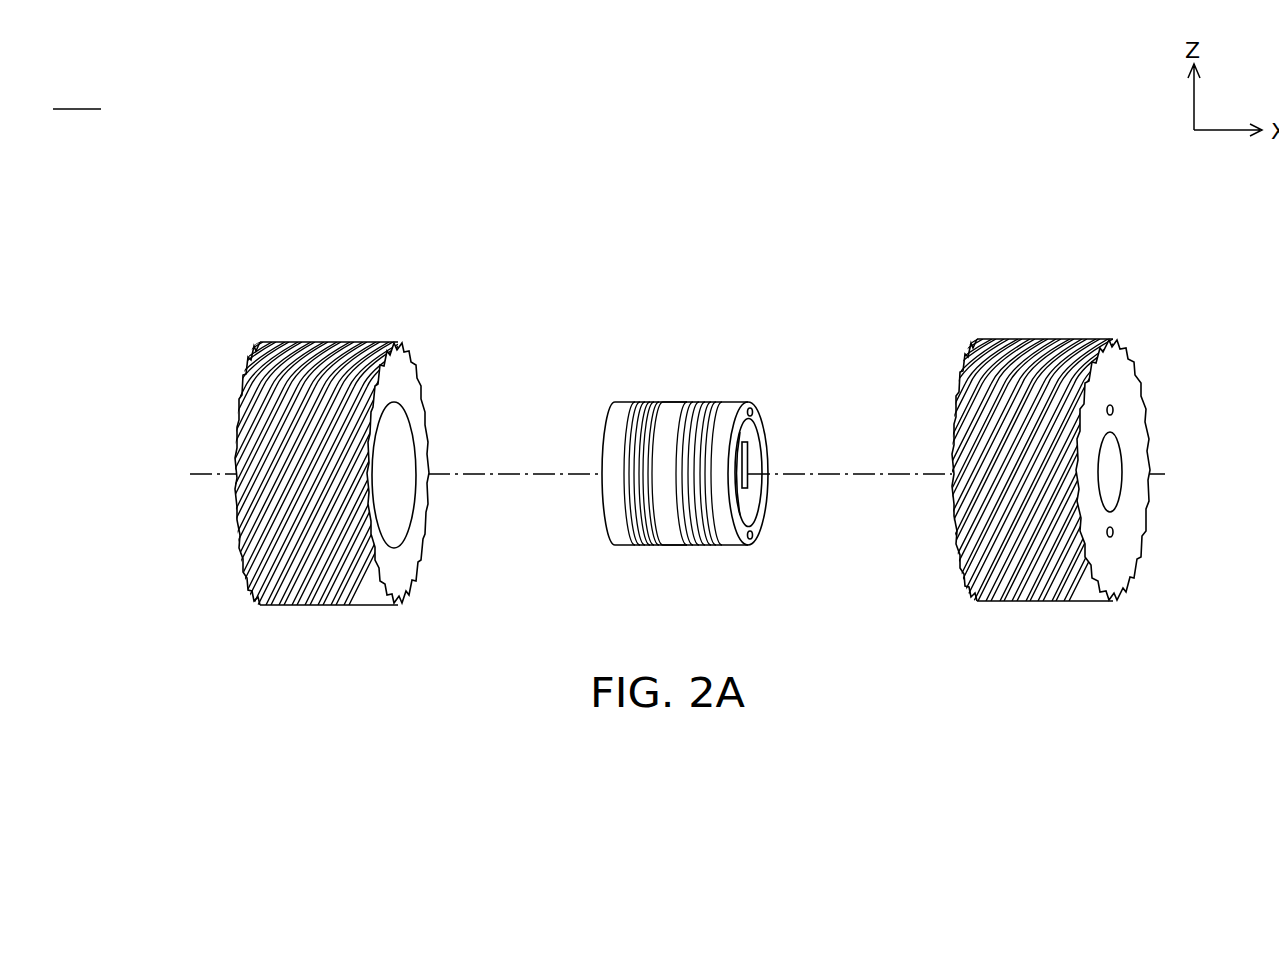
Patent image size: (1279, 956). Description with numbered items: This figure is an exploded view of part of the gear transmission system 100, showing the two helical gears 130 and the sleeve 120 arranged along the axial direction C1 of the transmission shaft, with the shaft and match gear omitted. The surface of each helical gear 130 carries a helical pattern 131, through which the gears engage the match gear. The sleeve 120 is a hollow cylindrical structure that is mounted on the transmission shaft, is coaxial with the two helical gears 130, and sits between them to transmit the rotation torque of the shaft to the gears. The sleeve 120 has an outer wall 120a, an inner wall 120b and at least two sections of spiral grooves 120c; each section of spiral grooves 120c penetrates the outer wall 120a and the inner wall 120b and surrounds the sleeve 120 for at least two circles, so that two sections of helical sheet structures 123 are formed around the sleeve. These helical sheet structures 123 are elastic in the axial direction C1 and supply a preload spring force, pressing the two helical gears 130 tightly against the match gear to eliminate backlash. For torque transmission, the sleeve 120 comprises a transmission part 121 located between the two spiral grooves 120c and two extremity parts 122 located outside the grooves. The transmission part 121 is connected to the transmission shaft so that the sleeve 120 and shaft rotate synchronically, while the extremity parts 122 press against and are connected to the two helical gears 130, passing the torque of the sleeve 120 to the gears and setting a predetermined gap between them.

The gear transmission system 100 is at (77, 95).
The axial direction C1 is at (485, 473).
The sleeve 120 is at (724, 479).
The outer wall 120a is at (685, 392).
The inner wall 120b is at (750, 445).
The spiral grooves 120c is at (632, 401).
The transmission part 121 is at (677, 546).
The extremity parts 122 is at (688, 469).
The helical sheet structures 123 is at (655, 401).
The helical gears 130 is at (657, 441).
The helical pattern 131 is at (332, 326).